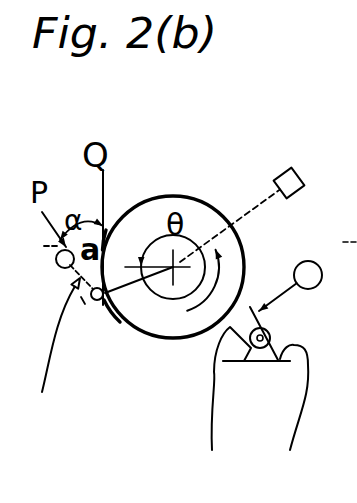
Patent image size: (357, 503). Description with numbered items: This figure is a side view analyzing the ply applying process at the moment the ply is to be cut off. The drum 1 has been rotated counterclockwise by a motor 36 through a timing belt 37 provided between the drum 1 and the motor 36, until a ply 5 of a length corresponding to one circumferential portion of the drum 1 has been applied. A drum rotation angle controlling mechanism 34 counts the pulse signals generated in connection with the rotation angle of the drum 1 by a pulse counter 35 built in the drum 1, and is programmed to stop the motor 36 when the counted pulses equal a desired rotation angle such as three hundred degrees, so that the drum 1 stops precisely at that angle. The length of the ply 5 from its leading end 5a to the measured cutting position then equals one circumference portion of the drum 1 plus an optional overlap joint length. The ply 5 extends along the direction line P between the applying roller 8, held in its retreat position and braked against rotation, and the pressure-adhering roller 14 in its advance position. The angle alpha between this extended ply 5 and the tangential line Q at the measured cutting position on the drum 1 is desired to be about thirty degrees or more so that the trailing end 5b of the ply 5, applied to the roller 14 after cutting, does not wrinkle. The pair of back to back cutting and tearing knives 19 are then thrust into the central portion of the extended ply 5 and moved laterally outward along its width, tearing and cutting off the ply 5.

The drum 1 is at (202, 201).
The ply 5 is at (158, 197).
The leading end of the ply 5a is at (104, 240).
The trailing end of the ply 5b is at (94, 302).
The applying roller 8 is at (56, 262).
The pressure-adhering roller 14 is at (103, 308).
The cutting-off knives 19 is at (54, 353).
The drum rotation angle controlling mechanism 34 is at (311, 261).
The pulse counter 35 is at (288, 168).
The motor 36 is at (295, 416).
The timing belt 37 is at (243, 397).